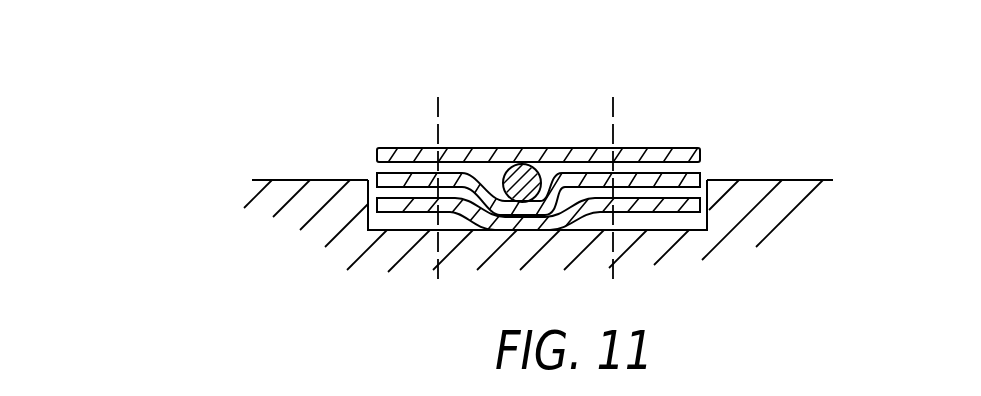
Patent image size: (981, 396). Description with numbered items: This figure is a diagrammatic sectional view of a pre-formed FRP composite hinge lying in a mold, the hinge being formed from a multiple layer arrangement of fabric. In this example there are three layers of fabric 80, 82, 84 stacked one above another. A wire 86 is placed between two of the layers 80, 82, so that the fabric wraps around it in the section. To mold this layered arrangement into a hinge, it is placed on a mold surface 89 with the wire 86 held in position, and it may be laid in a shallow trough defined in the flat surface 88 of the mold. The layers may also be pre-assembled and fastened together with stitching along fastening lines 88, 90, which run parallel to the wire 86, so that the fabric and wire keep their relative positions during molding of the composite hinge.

The fabric layer 80 is at (671, 208).
The fabric layer 82 is at (701, 179).
The fabric layer 84 is at (380, 148).
The wire 86 is at (523, 167).
The flat surface of the mold 88 is at (800, 180).
The mold surface 89 is at (437, 115).
The fastening line 90 is at (612, 132).